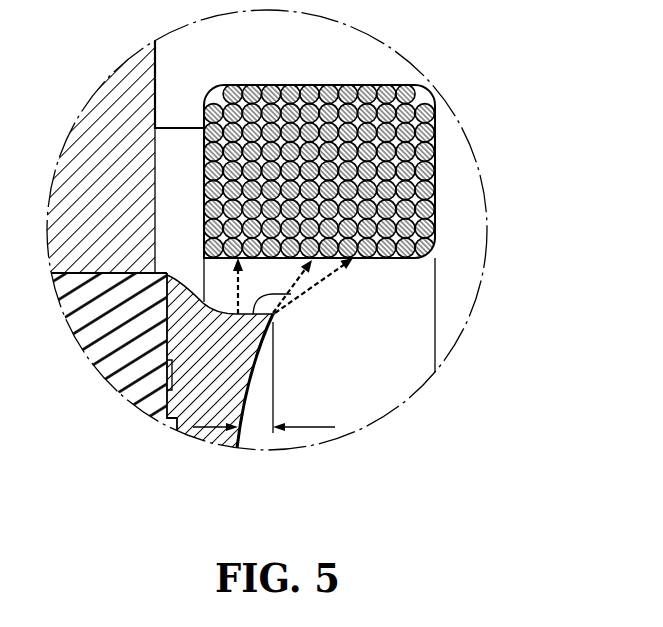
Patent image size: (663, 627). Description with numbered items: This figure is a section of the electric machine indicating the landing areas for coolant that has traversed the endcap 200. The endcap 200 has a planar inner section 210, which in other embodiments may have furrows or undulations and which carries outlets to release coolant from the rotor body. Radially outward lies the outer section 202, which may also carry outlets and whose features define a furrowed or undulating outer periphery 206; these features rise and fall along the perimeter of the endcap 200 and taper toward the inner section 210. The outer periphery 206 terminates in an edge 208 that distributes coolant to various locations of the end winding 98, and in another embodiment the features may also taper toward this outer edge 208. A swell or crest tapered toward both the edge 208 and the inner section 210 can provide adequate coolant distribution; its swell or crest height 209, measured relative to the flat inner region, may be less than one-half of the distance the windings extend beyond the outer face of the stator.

The end winding 98 is at (313, 96).
The endcap 200 is at (204, 382).
The outer section 202 is at (273, 373).
The outer periphery 206 is at (291, 295).
The edge 208 is at (205, 289).
The swell or crest height 209 is at (315, 427).
The inner section 210 is at (241, 434).